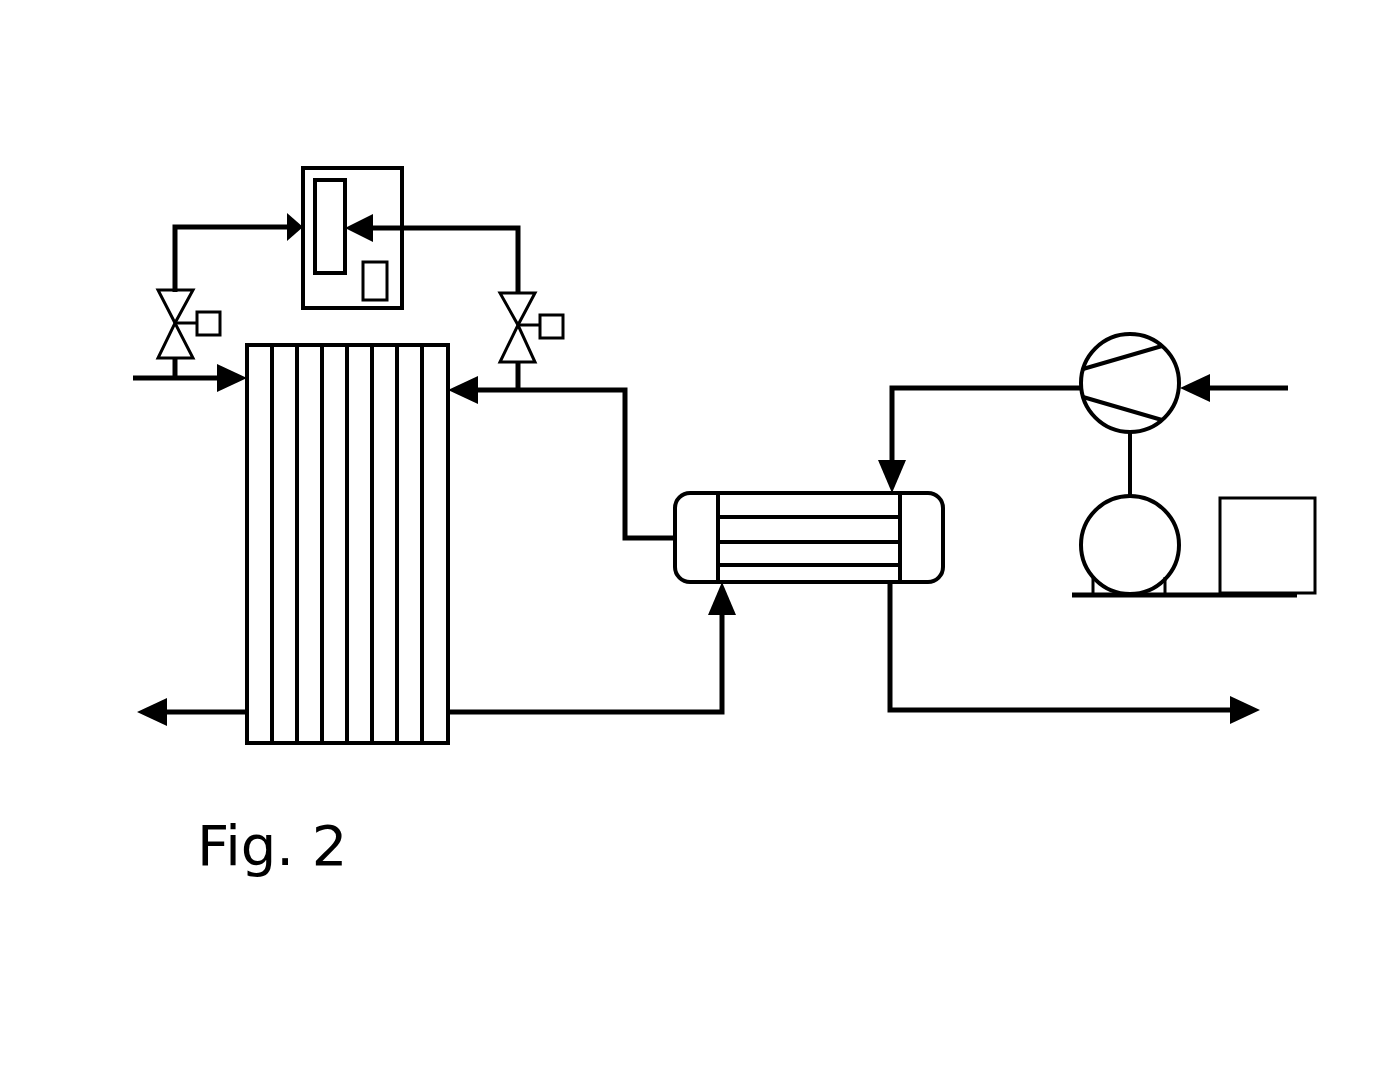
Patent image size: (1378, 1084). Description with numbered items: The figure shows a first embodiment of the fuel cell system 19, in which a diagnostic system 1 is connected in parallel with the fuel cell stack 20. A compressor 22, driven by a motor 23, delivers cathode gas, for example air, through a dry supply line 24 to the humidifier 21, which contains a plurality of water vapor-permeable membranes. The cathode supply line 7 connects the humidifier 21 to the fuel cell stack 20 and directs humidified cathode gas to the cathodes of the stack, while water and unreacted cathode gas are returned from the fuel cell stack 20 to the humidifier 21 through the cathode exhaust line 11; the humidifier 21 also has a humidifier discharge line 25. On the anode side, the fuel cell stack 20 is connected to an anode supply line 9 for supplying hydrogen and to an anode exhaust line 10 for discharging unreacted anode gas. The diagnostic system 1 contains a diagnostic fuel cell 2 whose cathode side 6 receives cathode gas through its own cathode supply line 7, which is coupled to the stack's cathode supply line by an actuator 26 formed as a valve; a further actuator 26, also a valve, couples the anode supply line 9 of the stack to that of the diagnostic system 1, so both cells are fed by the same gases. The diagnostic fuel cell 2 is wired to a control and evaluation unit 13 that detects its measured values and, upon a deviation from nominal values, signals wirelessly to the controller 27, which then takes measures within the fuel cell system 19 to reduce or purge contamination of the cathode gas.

The diagnostic system 1 is at (373, 185).
The diagnostic fuel cell 2 is at (325, 198).
The cathode side 6 is at (450, 692).
The cathode supply line 7 is at (520, 228).
The anode supply line 9 is at (230, 227).
The anode exhaust line 10 is at (218, 710).
The cathode exhaust line 11 is at (548, 714).
The control and evaluation unit 13 is at (372, 282).
The fuel cell system 19 is at (764, 270).
The fuel cell stack 20 is at (402, 495).
The humidifier 21 is at (808, 575).
The compressor 22 is at (1127, 350).
The motor 23 is at (1142, 513).
The dry supply line 24 is at (940, 385).
The humidifier discharge line 25 is at (957, 710).
The actuator 26 is at (206, 322).
The controller 27 is at (1268, 520).